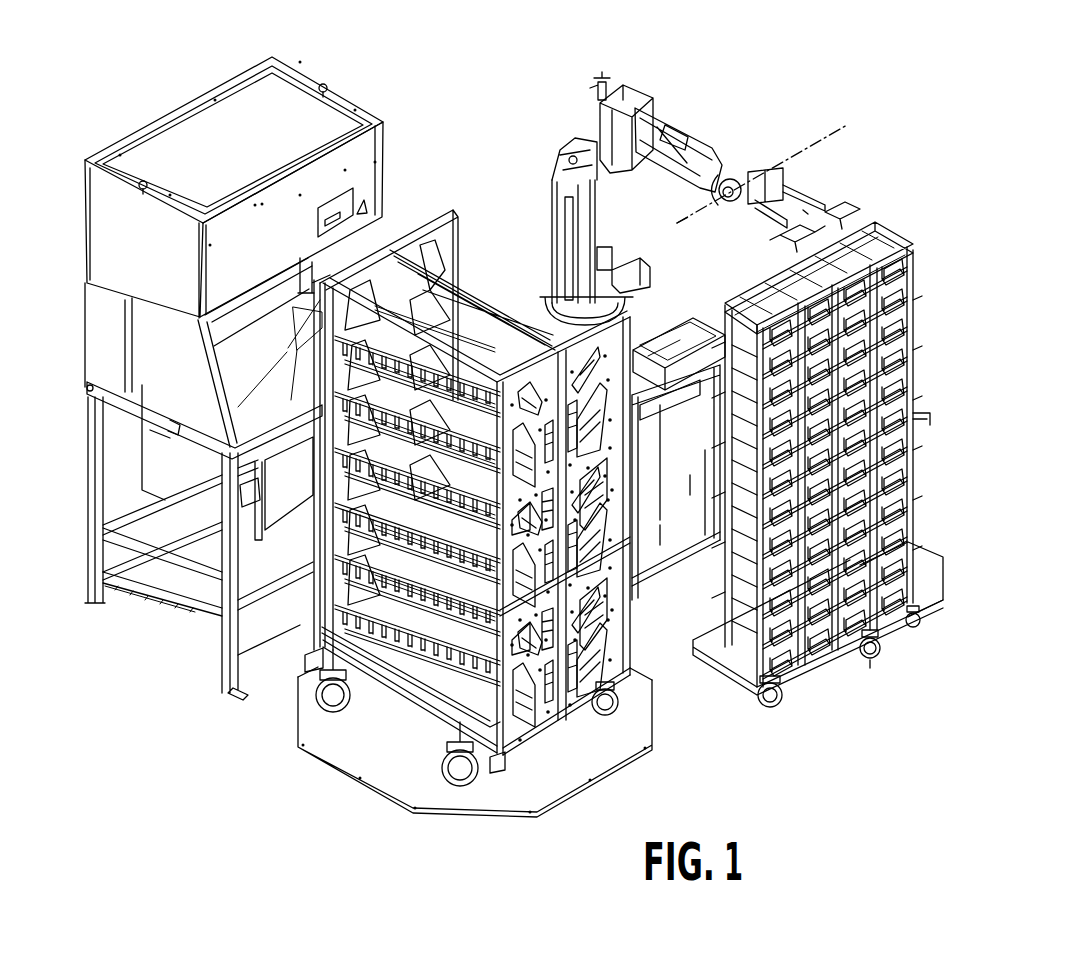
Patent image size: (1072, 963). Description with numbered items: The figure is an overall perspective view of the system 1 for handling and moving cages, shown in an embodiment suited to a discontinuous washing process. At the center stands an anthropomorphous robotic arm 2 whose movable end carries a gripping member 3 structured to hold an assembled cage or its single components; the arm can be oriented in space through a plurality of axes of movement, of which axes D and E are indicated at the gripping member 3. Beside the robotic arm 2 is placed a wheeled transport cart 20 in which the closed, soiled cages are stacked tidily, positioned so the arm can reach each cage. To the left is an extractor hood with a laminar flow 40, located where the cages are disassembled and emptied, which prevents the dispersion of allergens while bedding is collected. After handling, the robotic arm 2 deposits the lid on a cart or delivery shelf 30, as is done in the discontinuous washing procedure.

The system 1 is at (507, 82).
The anthropomorphous robotic arm 2 is at (543, 200).
The gripping member 3 is at (787, 167).
The transport cart 20 is at (920, 273).
The delivery shelf 30 is at (433, 200).
The extractor hood with a laminar flow 40 is at (380, 92).
The axis of movement D is at (673, 229).
The axis of movement E is at (808, 214).